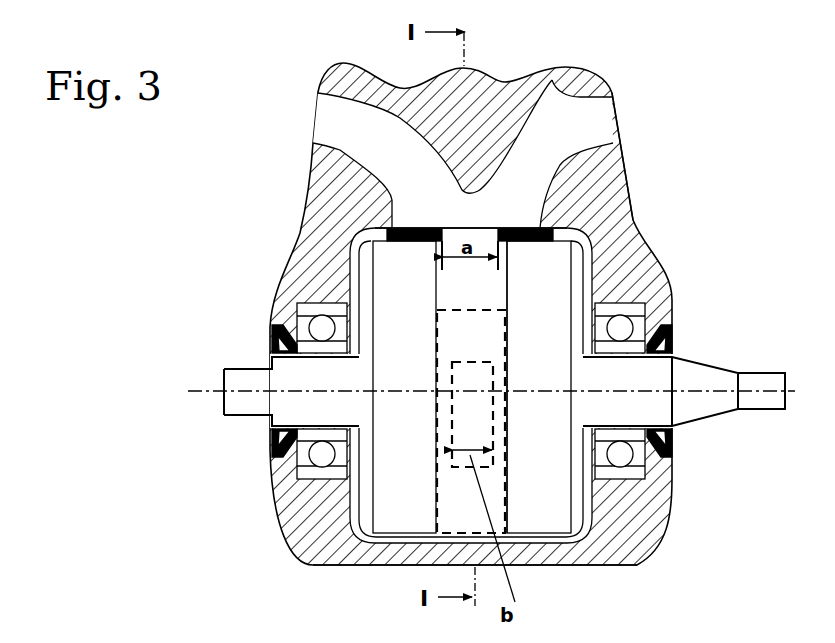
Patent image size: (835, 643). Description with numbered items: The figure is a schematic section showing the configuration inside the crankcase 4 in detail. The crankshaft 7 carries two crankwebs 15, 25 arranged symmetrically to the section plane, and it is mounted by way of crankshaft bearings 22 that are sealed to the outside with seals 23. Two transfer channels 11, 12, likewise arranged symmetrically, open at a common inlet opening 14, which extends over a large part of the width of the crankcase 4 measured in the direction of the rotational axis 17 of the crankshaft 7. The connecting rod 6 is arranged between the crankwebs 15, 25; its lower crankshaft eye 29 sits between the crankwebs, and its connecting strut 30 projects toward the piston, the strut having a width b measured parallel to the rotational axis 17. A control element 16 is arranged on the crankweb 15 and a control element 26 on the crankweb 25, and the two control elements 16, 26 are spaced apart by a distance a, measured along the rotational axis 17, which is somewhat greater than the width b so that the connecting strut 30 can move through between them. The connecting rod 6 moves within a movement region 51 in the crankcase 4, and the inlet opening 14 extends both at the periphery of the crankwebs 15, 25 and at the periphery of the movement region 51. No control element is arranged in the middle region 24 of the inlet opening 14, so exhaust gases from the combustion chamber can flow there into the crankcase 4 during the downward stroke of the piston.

The crankcase 4 is at (628, 252).
The connecting rod 6 is at (380, 565).
The crankshaft 7 is at (662, 412).
The transfer channel 11 is at (587, 127).
The transfer channel 12 is at (337, 123).
The inlet opening 14 is at (493, 217).
The crankweb 15 is at (552, 258).
The control element 16 is at (623, 177).
The rotational axis 17 is at (773, 390).
The crankshaft bearing 22 is at (645, 310).
The seal 23 is at (672, 343).
The middle region 24 is at (467, 217).
The crankweb 25 is at (395, 272).
The control element 26 is at (388, 233).
The crankshaft eye 29 is at (498, 500).
The connecting strut 30 is at (476, 426).
The movement region 51 is at (510, 487).